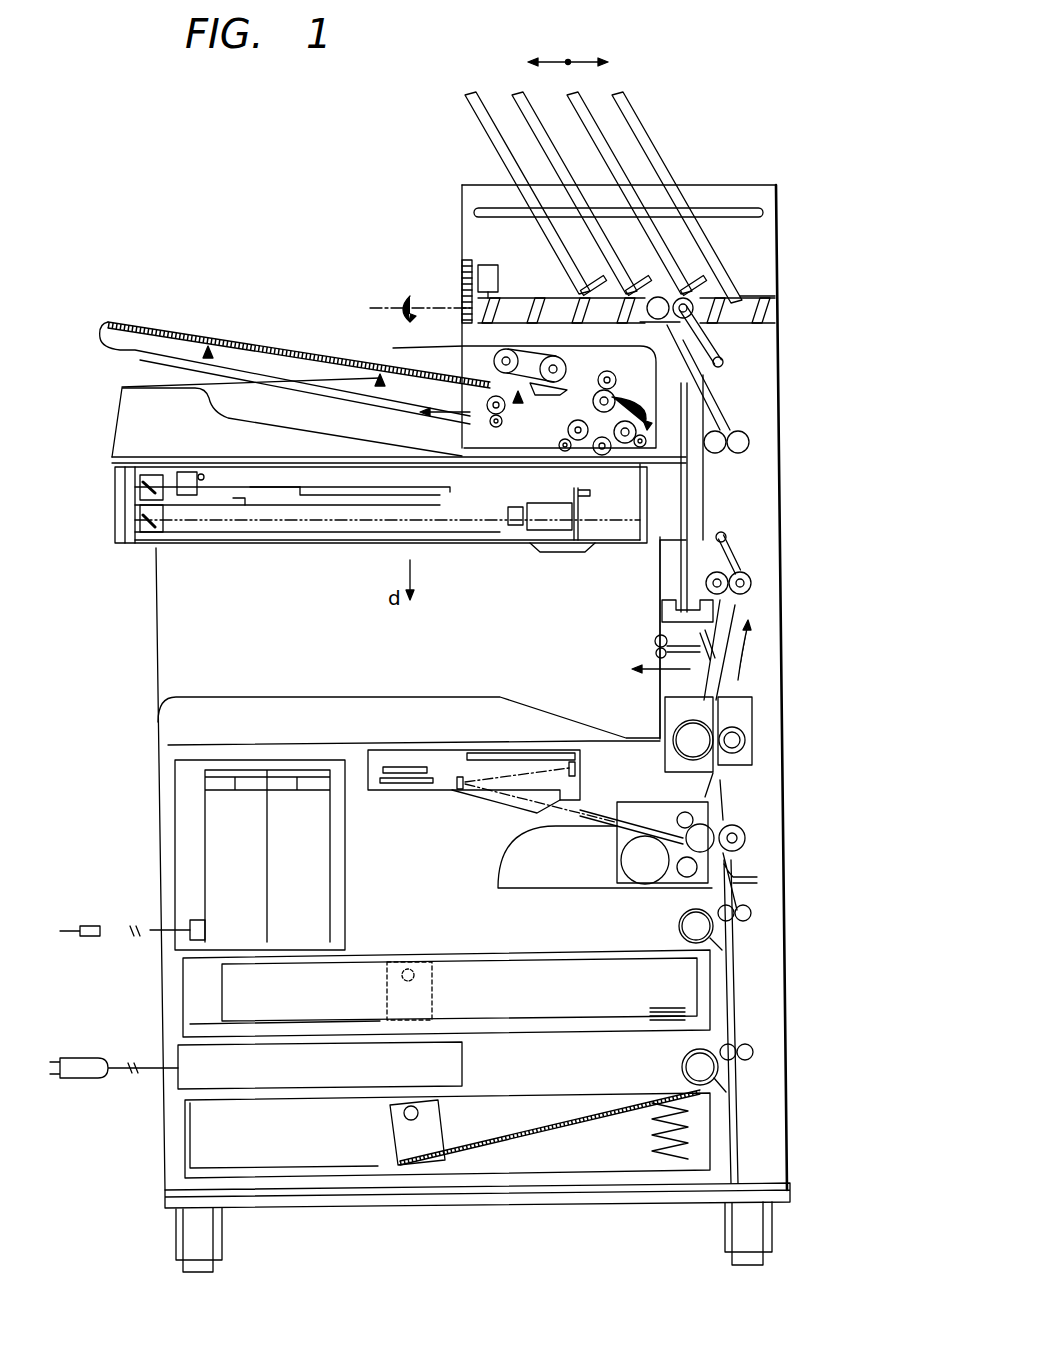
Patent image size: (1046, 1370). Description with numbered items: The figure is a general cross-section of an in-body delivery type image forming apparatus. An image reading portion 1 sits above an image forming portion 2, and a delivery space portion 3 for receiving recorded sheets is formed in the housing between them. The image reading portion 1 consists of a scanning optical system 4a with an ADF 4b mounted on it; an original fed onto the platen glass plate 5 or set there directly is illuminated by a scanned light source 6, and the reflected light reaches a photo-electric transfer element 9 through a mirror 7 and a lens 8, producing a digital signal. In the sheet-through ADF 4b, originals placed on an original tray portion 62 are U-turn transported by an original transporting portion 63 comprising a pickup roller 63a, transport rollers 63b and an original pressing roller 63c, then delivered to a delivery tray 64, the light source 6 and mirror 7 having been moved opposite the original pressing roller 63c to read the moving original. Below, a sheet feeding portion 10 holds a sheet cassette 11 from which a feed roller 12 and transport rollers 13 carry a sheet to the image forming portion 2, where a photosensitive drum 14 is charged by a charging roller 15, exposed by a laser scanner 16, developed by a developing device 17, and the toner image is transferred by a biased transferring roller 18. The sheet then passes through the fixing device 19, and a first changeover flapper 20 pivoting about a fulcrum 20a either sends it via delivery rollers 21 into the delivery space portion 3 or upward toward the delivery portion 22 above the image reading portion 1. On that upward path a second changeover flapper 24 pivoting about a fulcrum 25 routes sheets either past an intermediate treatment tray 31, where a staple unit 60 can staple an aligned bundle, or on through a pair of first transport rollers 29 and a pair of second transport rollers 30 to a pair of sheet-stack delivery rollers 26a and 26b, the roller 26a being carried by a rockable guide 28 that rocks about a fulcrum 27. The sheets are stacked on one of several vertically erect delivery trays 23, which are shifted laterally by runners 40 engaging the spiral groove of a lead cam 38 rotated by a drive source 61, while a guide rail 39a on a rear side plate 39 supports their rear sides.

The image reading portion 1 is at (122, 530).
The image forming portion 2 is at (175, 815).
The delivery space portion 3 is at (182, 657).
The scanning optical system 4a is at (120, 500).
The ADF 4b is at (127, 412).
The platen glass plate 5 is at (440, 463).
The light source 6 is at (200, 476).
The mirror 7 is at (148, 474).
The lens 8 is at (516, 507).
The photo-electric transfer element 9 is at (576, 506).
The sheet feeding portion 10 is at (175, 1150).
The sheet cassette 11 is at (541, 1040).
The feed roller 12 is at (680, 926).
The transport rollers 13 is at (752, 913).
The photosensitive drum 14 is at (714, 822).
The charging roller 15 is at (680, 810).
The laser scanner 16 is at (484, 795).
The developing device 17 is at (690, 870).
The transferring roller 18 is at (746, 840).
The fixing device 19 is at (755, 720).
The first changeover flapper 20 is at (655, 653).
The fulcrum 20a is at (688, 604).
The delivery rollers 21 is at (656, 640).
The delivery portion 22 is at (700, 185).
The delivery trays 23 is at (474, 178).
The second changeover flapper 24 is at (742, 566).
The fulcrum 25 is at (727, 537).
The sheet-stack delivery roller 26a is at (765, 308).
The sheet-stack delivery roller 26b is at (600, 280).
The fulcrum 27 is at (723, 364).
The rockable guide 28 is at (716, 340).
The pair of first transport rollers 29 is at (752, 584).
The pair of second transport rollers 30 is at (750, 441).
The intermediate treatment tray 31 is at (728, 470).
The lead cam 38 is at (463, 300).
The rear side plate 39 is at (760, 238).
The guide rail 39a is at (742, 212).
The runners 40 is at (765, 296).
The staple unit 60 is at (740, 603).
The drive source 61 is at (464, 270).
The original tray portion 62 is at (150, 332).
The original transporting portion 63 is at (393, 348).
The pickup roller 63a is at (462, 330).
The transport rollers 63b is at (572, 432).
The original pressing roller 63c is at (700, 452).
The delivery tray 64 is at (285, 432).